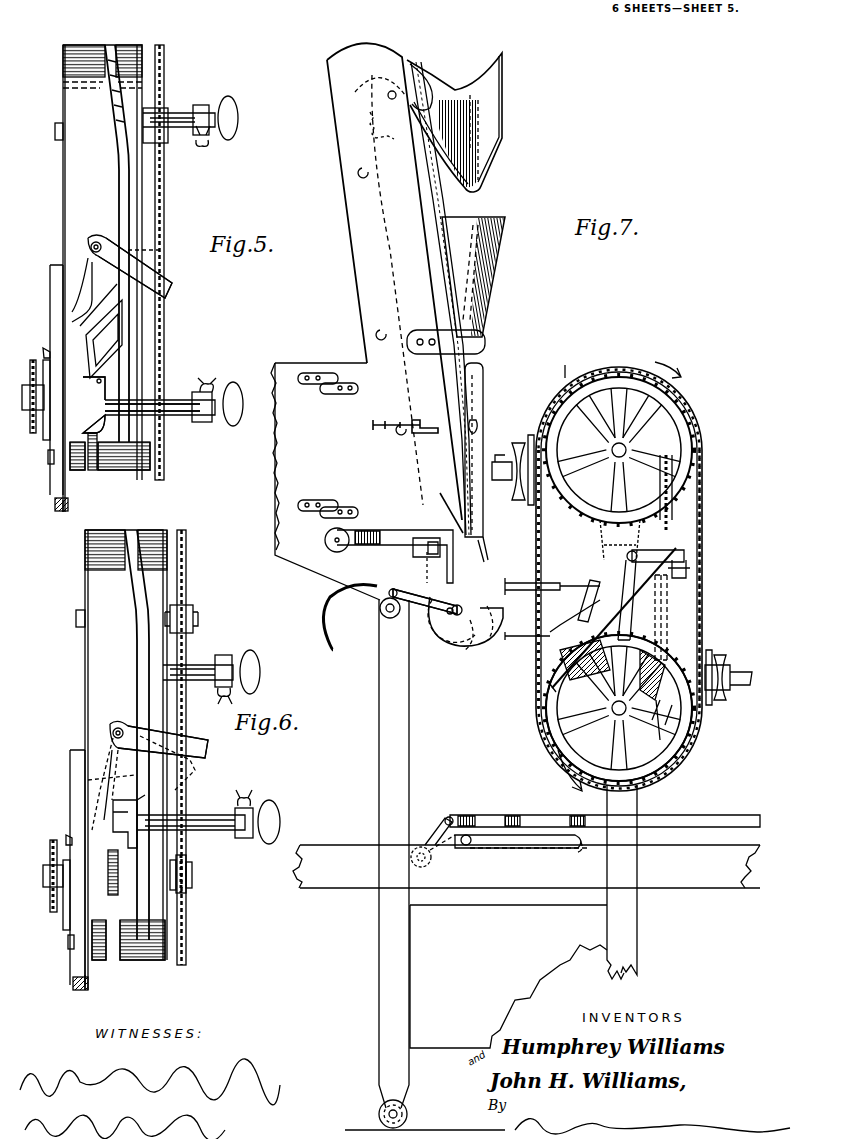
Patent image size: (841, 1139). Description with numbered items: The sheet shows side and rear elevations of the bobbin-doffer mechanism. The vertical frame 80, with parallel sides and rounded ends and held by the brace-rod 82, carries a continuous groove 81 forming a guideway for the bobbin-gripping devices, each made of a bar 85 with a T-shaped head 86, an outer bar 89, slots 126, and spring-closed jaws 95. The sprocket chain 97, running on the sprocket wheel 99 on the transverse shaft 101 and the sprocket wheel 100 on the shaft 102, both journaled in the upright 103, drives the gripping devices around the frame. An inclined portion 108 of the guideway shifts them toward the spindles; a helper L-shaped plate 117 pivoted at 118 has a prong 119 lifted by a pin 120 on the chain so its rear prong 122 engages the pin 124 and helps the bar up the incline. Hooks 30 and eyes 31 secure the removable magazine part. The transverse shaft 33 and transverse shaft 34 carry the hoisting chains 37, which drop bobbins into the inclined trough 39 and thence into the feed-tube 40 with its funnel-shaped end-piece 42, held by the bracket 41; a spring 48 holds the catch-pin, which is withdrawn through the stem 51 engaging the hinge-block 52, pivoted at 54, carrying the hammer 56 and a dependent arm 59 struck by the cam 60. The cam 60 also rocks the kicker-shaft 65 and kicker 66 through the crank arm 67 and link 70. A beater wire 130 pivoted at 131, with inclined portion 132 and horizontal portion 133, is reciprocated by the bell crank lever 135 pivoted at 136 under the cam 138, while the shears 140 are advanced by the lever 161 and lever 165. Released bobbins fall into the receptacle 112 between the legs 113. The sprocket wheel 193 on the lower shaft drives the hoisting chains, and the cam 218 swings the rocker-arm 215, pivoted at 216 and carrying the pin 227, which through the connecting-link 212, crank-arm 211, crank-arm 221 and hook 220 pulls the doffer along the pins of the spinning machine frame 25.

In FIG. 7, the spinning machine frame 25 is at (713, 845).
In FIG. 7, the hooks 30 is at (330, 397).
In FIG. 7, the eyes 31 is at (310, 387).
In FIG. 7, the transverse shaft 33 is at (389, 92).
In FIG. 7, the transverse shaft 34 is at (459, 616).
In FIG. 7, the hoisting chains 37 is at (466, 198).
In FIG. 7, the inclined trough 39 is at (490, 118).
In FIG. 7, the feed-tube 40 is at (484, 408).
In FIG. 7, the bracket 41 is at (487, 345).
In FIG. 7, the funnel-shaped end-piece 42 is at (492, 270).
In FIG. 7, the spring 48 is at (433, 424).
In FIG. 7, the stem 51 is at (452, 524).
In FIG. 7, the hinge-block 52 is at (386, 528).
In FIG. 7, the pivot 54 is at (326, 542).
In FIG. 7, the weight or hammer 56 is at (414, 552).
In FIG. 7, the dependent arm 59 is at (450, 566).
In FIG. 7, the cam 60 is at (482, 632).
In FIG. 7, the kicker-shaft 65 is at (380, 612).
In FIG. 7, the kicker 66 is at (326, 645).
In FIG. 7, the crank arm 67 is at (390, 591).
In FIG. 7, the link 70 is at (445, 618).
In FIG. 5, the frame 80 is at (70, 200).
In FIG. 6, the frame 80 is at (95, 564).
In FIG. 5, the continuous groove 81 is at (109, 46).
In FIG. 6, the continuous groove 81 is at (132, 530).
In FIG. 7, the brace-rod 82 is at (564, 363).
In FIG. 5, the bar 85 is at (176, 112).
In FIG. 6, the bar 85 is at (205, 682).
In FIG. 5, the T-shaped head 86 is at (100, 425).
In FIG. 6, the T-shaped head 86 is at (124, 846).
In FIG. 5, the outer bar 89 is at (136, 415).
In FIG. 6, the outer bar 89 is at (216, 832).
In FIG. 7, the outer bar 89 is at (512, 462).
In FIG. 5, the jaws 95 is at (230, 118).
In FIG. 6, the jaws 95 is at (252, 672).
In FIG. 7, the jaws 95 is at (516, 502).
In FIG. 5, the sprocket chain 97 is at (164, 212).
In FIG. 6, the sprocket chain 97 is at (186, 795).
In FIG. 7, the sprocket chain 97 is at (537, 540).
In FIG. 7, the sprocket wheel 99 is at (695, 410).
In FIG. 7, the sprocket wheel 100 is at (670, 765).
In FIG. 5, the transverse shaft 101 is at (58, 124).
In FIG. 6, the transverse shaft 101 is at (78, 620).
In FIG. 7, the transverse shaft 101 is at (619, 467).
In FIG. 5, the shaft 102 is at (30, 400).
In FIG. 6, the shaft 102 is at (44, 880).
In FIG. 7, the shaft 102 is at (619, 708).
In FIG. 7, the upright 103 is at (619, 505).
In FIG. 5, the inclined portion 108 is at (108, 338).
In FIG. 7, the receptacle 112 is at (508, 976).
In FIG. 7, the legs 113 is at (380, 780).
In FIG. 5, the L-shaped plate 117 is at (101, 242).
In FIG. 6, the L-shaped plate 117 is at (124, 726).
In FIG. 5, the pivot 118 is at (92, 246).
In FIG. 6, the pivot 118 is at (114, 732).
In FIG. 5, the prong 119 is at (174, 288).
In FIG. 6, the prong 119 is at (208, 748).
In FIG. 5, the pin 120 is at (166, 296).
In FIG. 6, the pin 120 is at (200, 762).
In FIG. 5, the rear prong 122 is at (72, 318).
In FIG. 6, the rear prong 122 is at (98, 786).
In FIG. 5, the pin 124 is at (102, 380).
In FIG. 5, the slots 126 is at (178, 135).
In FIG. 6, the slots 126 is at (200, 665).
In FIG. 7, the wire 130 is at (686, 550).
In FIG. 7, the pivot 131 is at (688, 572).
In FIG. 7, the inclined portion 132 is at (578, 625).
In FIG. 7, the horizontal portion 133 is at (522, 628).
In FIG. 7, the bell crank lever 135 is at (627, 590).
In FIG. 7, the pivot 136 is at (618, 548).
In FIG. 7, the cam 138 is at (552, 690).
In FIG. 7, the shears 140 is at (522, 590).
In FIG. 7, the lever 161 is at (670, 612).
In FIG. 7, the lever 165 is at (660, 732).
In FIG. 5, the sprocket wheel 193 is at (92, 420).
In FIG. 6, the sprocket wheel 193 is at (60, 900).
In FIG. 7, the crank-arm 211 is at (442, 818).
In FIG. 5, the connecting-link 212 is at (60, 512).
In FIG. 6, the connecting-link 212 is at (84, 992).
In FIG. 7, the connecting-link 212 is at (526, 815).
In FIG. 5, the rocker-arm 215 is at (55, 504).
In FIG. 6, the rocker-arm 215 is at (73, 982).
In FIG. 5, the pivot 216 is at (55, 272).
In FIG. 6, the pivot 216 is at (70, 762).
In FIG. 5, the cam 218 is at (56, 462).
In FIG. 6, the cam 218 is at (72, 942).
In FIG. 7, the hook 220 is at (538, 848).
In FIG. 7, the crank-arm 221 is at (452, 840).
In FIG. 5, the pin 227 is at (46, 348).
In FIG. 6, the pin 227 is at (68, 834).